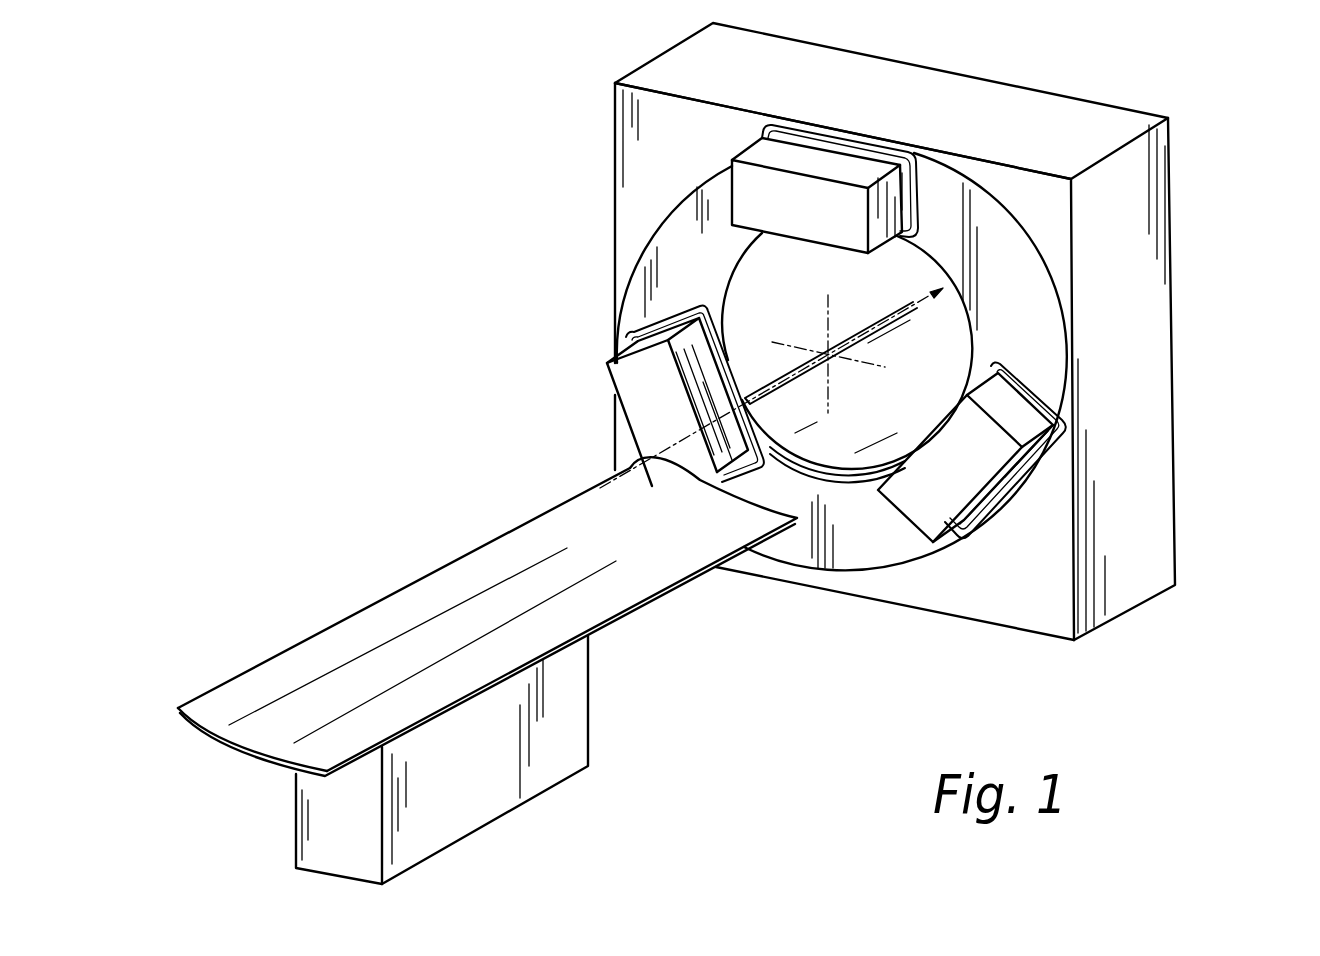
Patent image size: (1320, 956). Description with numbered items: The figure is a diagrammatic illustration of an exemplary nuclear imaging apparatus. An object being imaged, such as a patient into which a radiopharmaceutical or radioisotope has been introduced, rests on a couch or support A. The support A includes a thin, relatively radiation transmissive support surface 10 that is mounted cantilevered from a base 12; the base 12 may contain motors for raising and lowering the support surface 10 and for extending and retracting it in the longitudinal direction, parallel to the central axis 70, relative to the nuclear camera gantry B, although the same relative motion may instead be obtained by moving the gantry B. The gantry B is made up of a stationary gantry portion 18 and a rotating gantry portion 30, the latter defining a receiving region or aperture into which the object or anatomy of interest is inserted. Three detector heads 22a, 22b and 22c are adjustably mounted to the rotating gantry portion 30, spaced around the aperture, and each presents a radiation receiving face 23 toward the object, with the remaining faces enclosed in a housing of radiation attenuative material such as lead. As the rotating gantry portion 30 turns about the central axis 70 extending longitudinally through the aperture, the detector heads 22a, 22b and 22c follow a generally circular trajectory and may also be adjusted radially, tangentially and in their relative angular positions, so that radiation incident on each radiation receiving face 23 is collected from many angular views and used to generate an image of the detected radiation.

The support surface 10 is at (323, 656).
The base 12 is at (465, 774).
The stationary gantry portion 18 is at (1147, 469).
The detector head 22a is at (778, 208).
The detector head 22b is at (915, 490).
The detector head 22c is at (655, 412).
The radiation receiving face 23 is at (815, 256).
The rotating gantry portion 30 is at (1012, 275).
The central axis 70 is at (830, 352).
The support A is at (419, 540).
The nuclear camera gantry B is at (1250, 165).